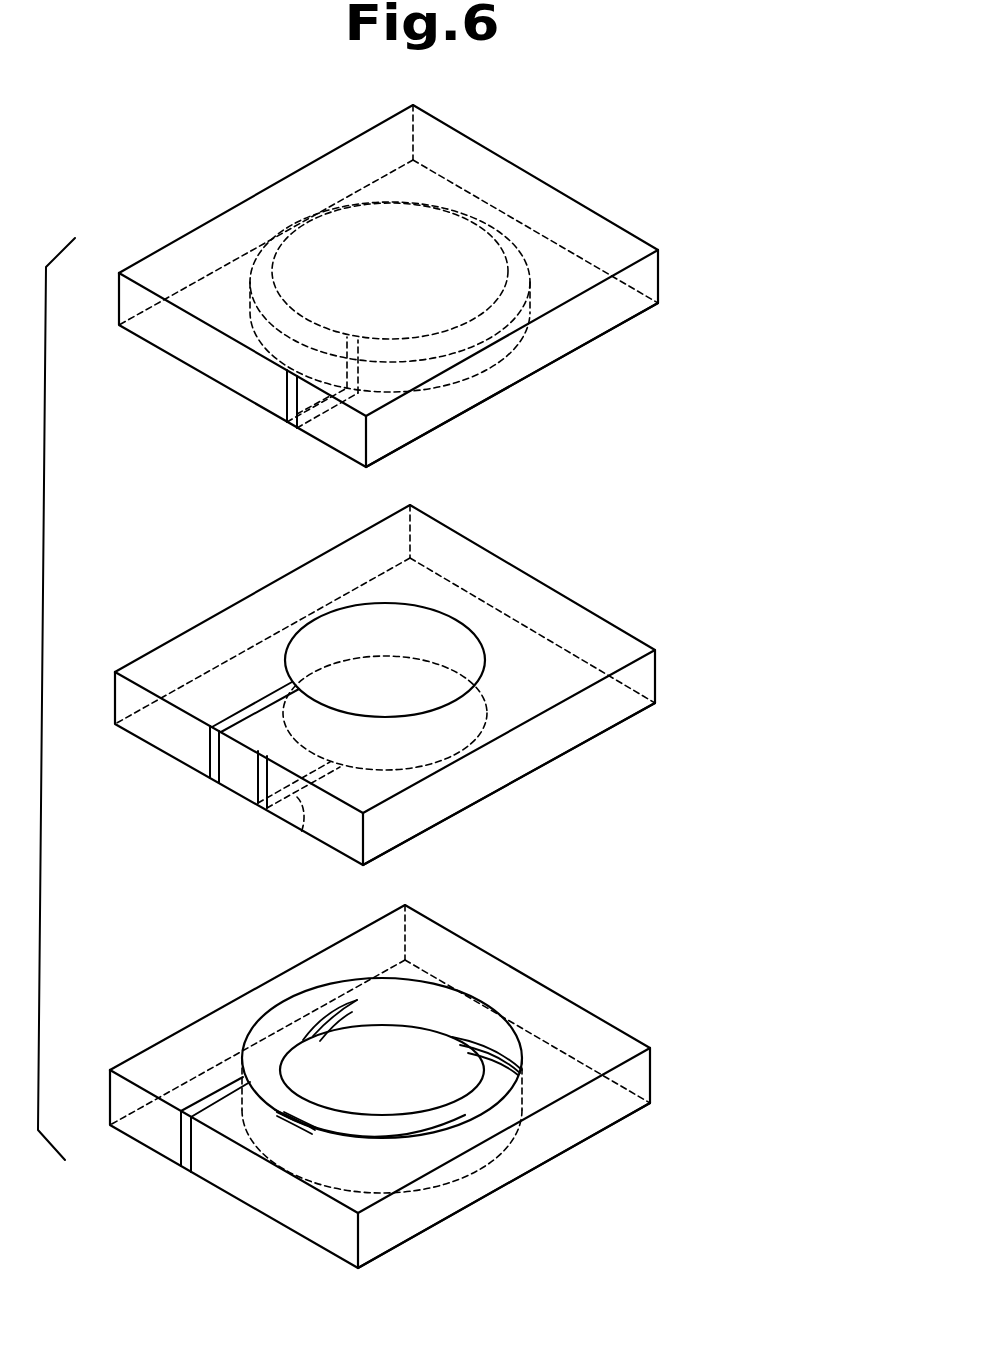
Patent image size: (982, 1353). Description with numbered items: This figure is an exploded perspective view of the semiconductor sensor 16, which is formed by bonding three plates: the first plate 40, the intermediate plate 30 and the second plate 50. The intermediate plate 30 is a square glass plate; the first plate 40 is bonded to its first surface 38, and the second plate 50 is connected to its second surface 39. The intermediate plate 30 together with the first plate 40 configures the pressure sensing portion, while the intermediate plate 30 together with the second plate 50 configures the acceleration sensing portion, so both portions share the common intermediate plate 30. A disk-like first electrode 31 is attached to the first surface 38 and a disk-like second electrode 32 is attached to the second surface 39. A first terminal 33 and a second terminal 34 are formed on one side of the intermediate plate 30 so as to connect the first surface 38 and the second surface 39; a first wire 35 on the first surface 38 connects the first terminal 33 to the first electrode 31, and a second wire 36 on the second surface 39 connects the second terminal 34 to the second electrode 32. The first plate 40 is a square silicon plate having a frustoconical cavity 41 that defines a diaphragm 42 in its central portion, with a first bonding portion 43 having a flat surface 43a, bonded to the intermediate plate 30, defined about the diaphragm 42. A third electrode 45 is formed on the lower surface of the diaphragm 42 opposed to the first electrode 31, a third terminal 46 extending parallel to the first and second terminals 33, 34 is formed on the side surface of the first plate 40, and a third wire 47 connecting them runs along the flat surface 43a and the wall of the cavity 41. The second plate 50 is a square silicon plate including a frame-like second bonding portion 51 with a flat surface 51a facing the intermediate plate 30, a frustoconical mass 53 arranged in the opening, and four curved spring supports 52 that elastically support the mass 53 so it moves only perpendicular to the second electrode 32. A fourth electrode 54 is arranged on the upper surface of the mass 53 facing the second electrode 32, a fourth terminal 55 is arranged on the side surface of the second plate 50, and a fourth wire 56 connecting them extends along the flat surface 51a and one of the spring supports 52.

The semiconductor sensor 16 is at (794, 436).
The intermediate plate 30 is at (420, 696).
The first electrode 31 is at (440, 606).
The second electrode 32 is at (490, 705).
The first terminal 33 is at (210, 762).
The second terminal 34 is at (258, 800).
The first wire 35 is at (245, 700).
The second wire 36 is at (301, 833).
The first surface 38 is at (585, 623).
The second surface 39 is at (600, 736).
The first plate 40 is at (422, 301).
The frustoconical cavity 41 is at (531, 348).
The diaphragm 42 is at (450, 227).
The first bonding portion 43 is at (648, 316).
The flat surface 43a is at (603, 333).
The third electrode 45 is at (310, 228).
The third terminal 46 is at (287, 402).
The third wire 47 is at (322, 435).
The second plate 50 is at (414, 1080).
The second bonding portion 51 is at (628, 1035).
The flat surface 51a is at (575, 1012).
The spring support 52 is at (358, 995).
The mass 53 is at (298, 1045).
The fourth electrode 54 is at (258, 1045).
The fourth terminal 55 is at (190, 1153).
The fourth wire 56 is at (205, 1092).